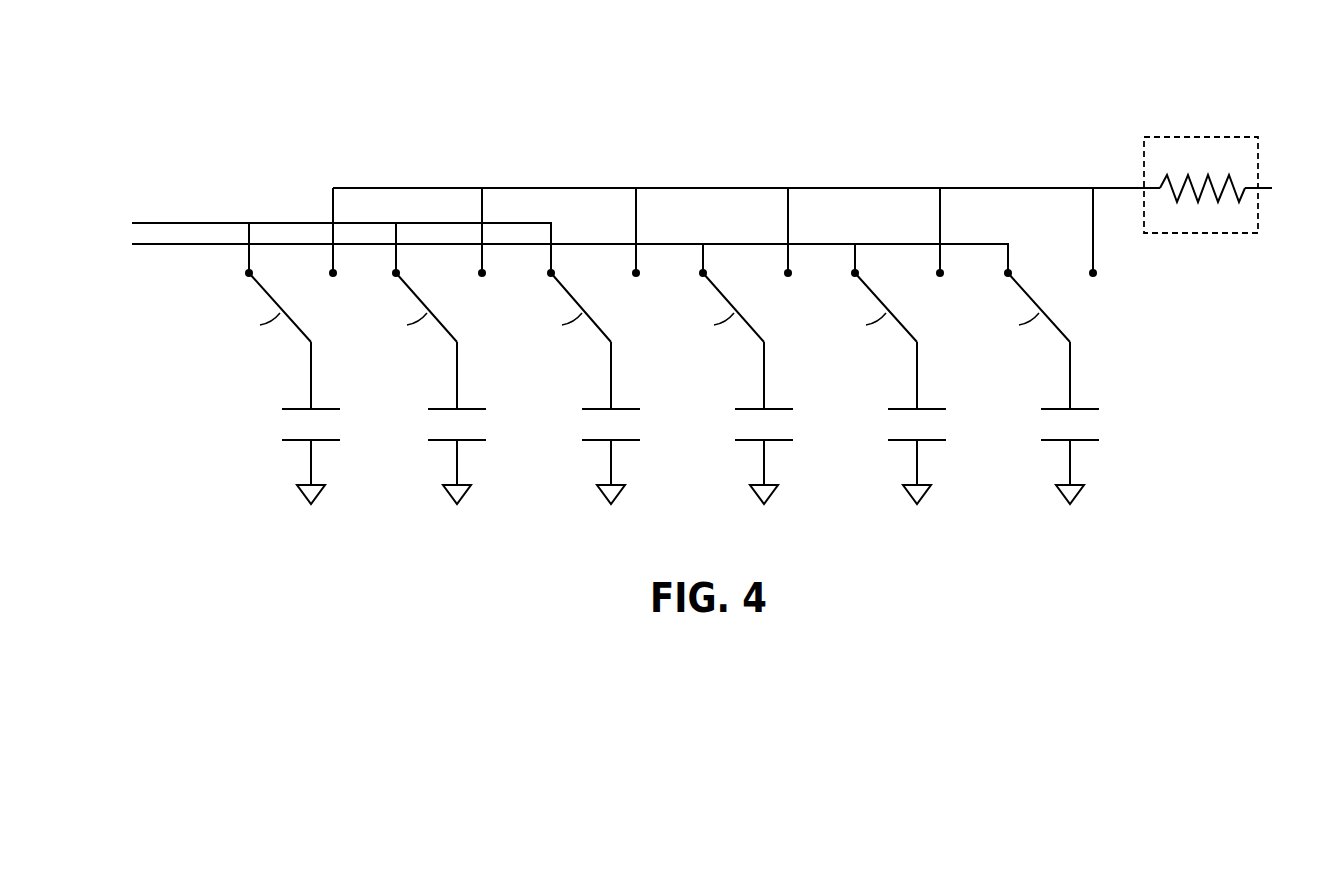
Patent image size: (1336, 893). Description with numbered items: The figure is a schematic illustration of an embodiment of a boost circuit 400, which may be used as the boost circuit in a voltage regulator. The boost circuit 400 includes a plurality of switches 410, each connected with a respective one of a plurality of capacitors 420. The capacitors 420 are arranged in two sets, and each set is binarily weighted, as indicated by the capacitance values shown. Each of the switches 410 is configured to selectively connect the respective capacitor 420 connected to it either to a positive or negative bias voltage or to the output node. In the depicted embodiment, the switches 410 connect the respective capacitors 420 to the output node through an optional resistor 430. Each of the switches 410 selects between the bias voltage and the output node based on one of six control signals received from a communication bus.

The boost circuit 400 is at (213, 104).
The switches 410 is at (1119, 278).
The capacitors 420 is at (1154, 424).
The resistor 430 is at (1180, 137).